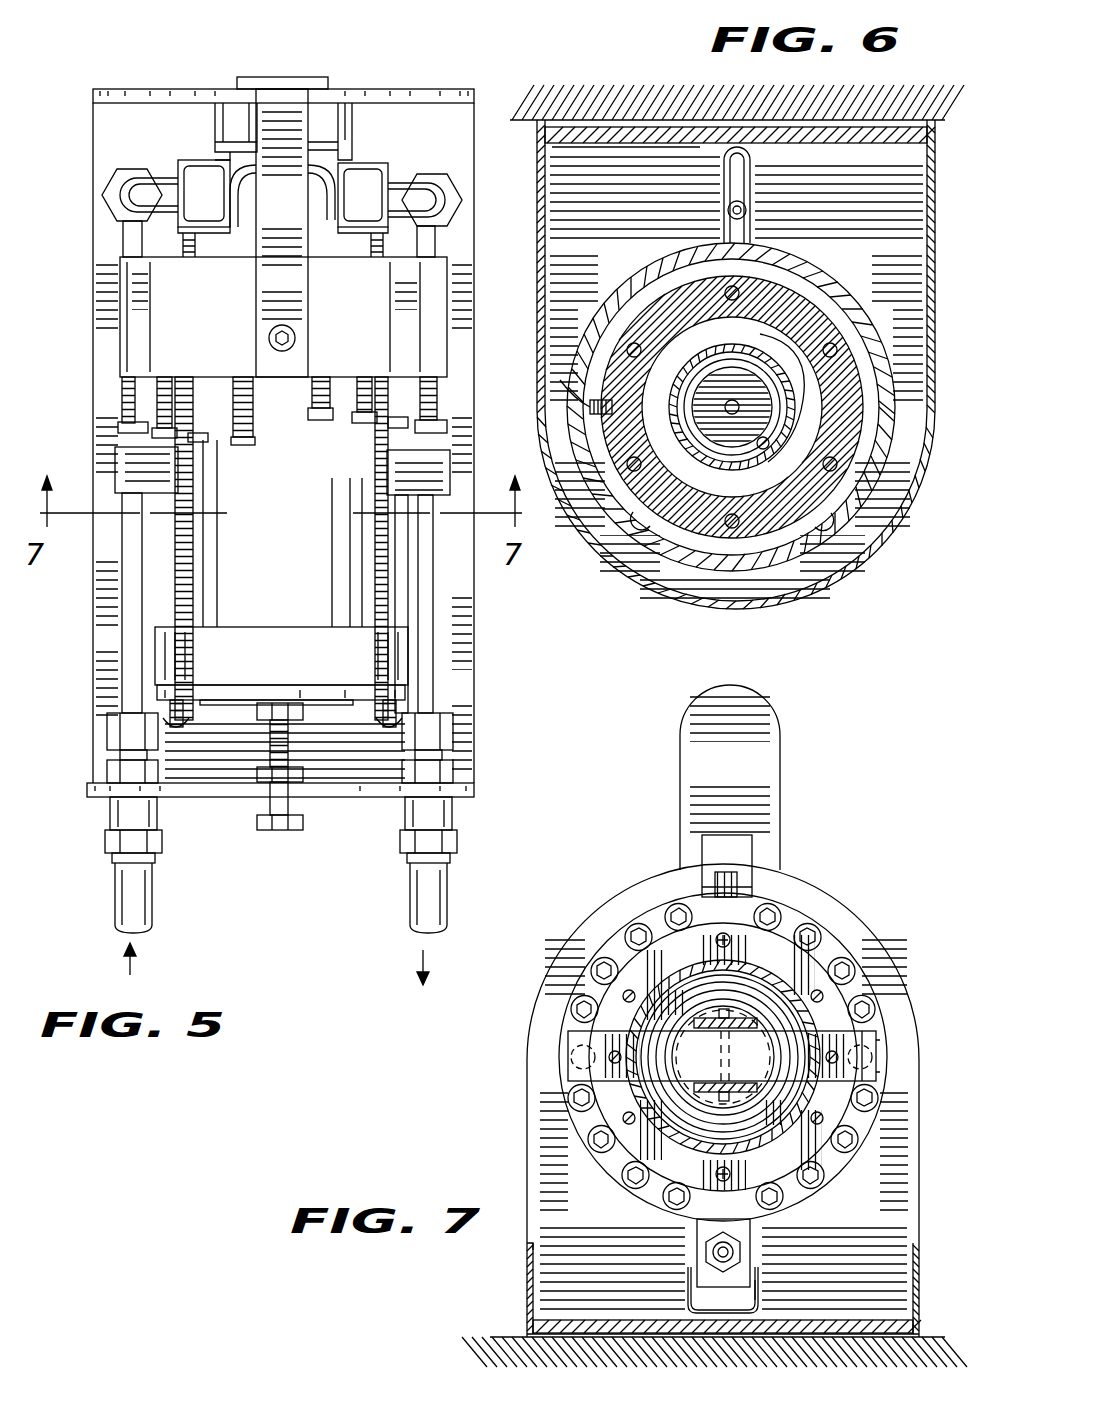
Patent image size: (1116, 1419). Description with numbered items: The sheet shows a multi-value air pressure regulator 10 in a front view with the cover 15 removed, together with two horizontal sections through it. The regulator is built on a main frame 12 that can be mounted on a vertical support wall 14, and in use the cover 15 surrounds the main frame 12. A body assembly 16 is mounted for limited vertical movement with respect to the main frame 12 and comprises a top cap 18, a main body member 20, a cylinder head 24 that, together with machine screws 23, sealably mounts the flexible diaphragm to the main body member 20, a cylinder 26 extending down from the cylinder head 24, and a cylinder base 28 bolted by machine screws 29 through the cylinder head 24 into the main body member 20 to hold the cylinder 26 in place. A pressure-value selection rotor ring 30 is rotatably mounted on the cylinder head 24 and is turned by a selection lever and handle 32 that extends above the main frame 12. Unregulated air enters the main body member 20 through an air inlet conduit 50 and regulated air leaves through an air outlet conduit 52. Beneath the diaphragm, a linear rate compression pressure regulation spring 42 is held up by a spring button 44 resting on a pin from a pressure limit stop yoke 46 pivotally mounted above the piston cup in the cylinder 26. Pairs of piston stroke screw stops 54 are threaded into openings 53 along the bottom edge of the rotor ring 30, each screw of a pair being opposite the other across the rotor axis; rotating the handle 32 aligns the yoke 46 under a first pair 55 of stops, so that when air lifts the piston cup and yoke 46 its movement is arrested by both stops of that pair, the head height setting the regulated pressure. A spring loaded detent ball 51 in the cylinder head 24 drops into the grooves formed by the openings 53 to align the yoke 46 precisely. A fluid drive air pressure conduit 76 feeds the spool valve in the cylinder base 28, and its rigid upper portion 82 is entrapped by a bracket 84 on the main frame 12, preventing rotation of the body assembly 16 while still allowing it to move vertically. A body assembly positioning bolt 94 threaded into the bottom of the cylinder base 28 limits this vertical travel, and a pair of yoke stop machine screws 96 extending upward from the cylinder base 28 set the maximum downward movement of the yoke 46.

In FIG. 5, the multi-value air pressure regulator 10 is at (324, 404).
In FIG. 6, the multi-value air pressure regulator 10 is at (736, 364).
In FIG. 7, the multi-value air pressure regulator 10 is at (724, 1063).
In FIG. 5, the main frame 12 is at (452, 98).
In FIG. 6, the main frame 12 is at (705, 143).
In FIG. 7, the main frame 12 is at (842, 916).
In FIG. 6, the vertical support wall 14 is at (655, 105).
In FIG. 7, the vertical support wall 14 is at (515, 1336).
In FIG. 7, the cover 15 is at (530, 1243).
In FIG. 5, the body assembly 16 is at (336, 552).
In FIG. 7, the body assembly 16 is at (720, 1103).
In FIG. 5, the top cap 18 is at (215, 108).
In FIG. 5, the main body member 20 is at (355, 180).
In FIG. 6, the machine screws 23 is at (730, 292).
In FIG. 7, the machine screws 23 is at (730, 935).
In FIG. 6, the cylinder head 24 is at (828, 306).
In FIG. 7, the cylinder head 24 is at (630, 955).
In FIG. 5, the cylinder 26 is at (268, 568).
In FIG. 7, the cylinder 26 is at (765, 1138).
In FIG. 5, the cylinder base 28 is at (268, 667).
In FIG. 5, the machine screws 29 is at (195, 533).
In FIG. 6, the machine screws 29 is at (634, 343).
In FIG. 7, the machine screws 29 is at (823, 993).
In FIG. 5, the pressure-value selection rotor ring 30 is at (135, 311).
In FIG. 6, the pressure-value selection rotor ring 30 is at (810, 258).
In FIG. 7, the pressure-value selection rotor ring 30 is at (832, 951).
In FIG. 5, the selection lever and handle 32 is at (290, 76).
In FIG. 7, the selection lever and handle 32 is at (736, 850).
In FIG. 6, the pressure regulation spring 42 is at (770, 455).
In FIG. 6, the spring button 44 is at (748, 383).
In FIG. 7, the spring button 44 is at (757, 1020).
In FIG. 5, the pressure limit stop yoke 46 is at (130, 464).
In FIG. 7, the pressure limit stop yoke 46 is at (876, 1033).
In FIG. 5, the air inlet conduit 50 is at (135, 238).
In FIG. 6, the spring loaded detent ball 51 is at (590, 405).
In FIG. 5, the air outlet conduit 52 is at (437, 200).
In FIG. 6, the openings 53 is at (640, 527).
In FIG. 5, the piston stroke screw stops 54 is at (120, 386).
In FIG. 7, the piston stroke screw stops 54 is at (808, 930).
In FIG. 5, the first pair of piston stroke screw stops 55 is at (118, 427).
In FIG. 7, the first pair of piston stroke screw stops 55 is at (572, 1051).
In FIG. 6, the fluid drive air pressure conduit 76 is at (751, 169).
In FIG. 7, the fluid drive air pressure conduit 76 is at (746, 1250).
In FIG. 7, the upper portion of the fluid drive pressure conduit 82 is at (702, 1287).
In FIG. 7, the bracket 84 is at (760, 1286).
In FIG. 5, the body assembly positioning bolt 94 is at (268, 800).
In FIG. 5, the yoke stop machine screws 96 is at (408, 546).
In FIG. 7, the yoke stop machine screws 96 is at (600, 1056).